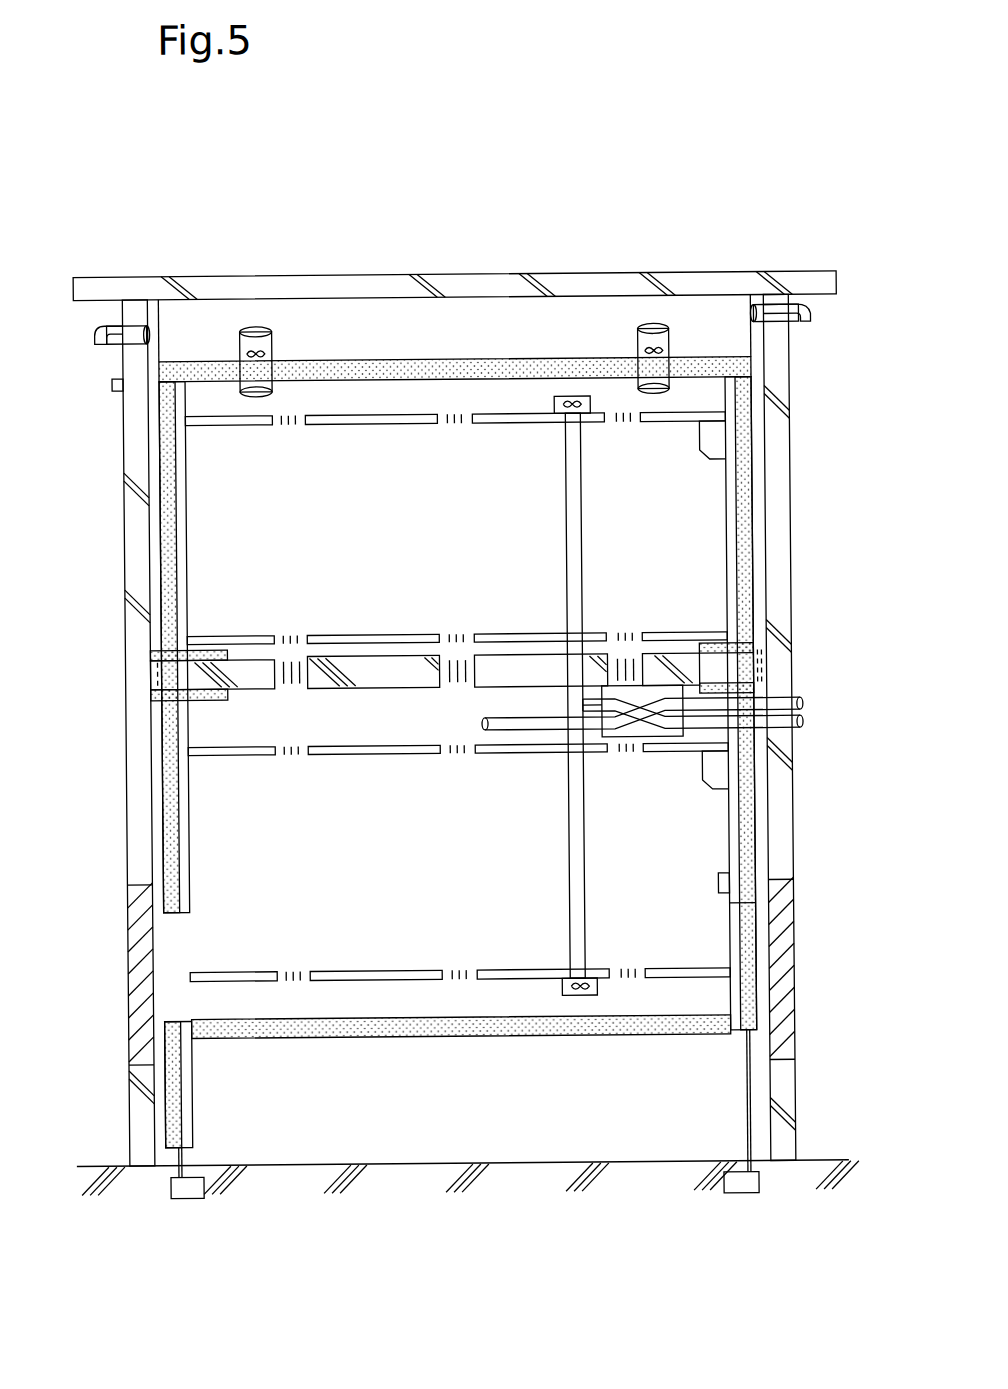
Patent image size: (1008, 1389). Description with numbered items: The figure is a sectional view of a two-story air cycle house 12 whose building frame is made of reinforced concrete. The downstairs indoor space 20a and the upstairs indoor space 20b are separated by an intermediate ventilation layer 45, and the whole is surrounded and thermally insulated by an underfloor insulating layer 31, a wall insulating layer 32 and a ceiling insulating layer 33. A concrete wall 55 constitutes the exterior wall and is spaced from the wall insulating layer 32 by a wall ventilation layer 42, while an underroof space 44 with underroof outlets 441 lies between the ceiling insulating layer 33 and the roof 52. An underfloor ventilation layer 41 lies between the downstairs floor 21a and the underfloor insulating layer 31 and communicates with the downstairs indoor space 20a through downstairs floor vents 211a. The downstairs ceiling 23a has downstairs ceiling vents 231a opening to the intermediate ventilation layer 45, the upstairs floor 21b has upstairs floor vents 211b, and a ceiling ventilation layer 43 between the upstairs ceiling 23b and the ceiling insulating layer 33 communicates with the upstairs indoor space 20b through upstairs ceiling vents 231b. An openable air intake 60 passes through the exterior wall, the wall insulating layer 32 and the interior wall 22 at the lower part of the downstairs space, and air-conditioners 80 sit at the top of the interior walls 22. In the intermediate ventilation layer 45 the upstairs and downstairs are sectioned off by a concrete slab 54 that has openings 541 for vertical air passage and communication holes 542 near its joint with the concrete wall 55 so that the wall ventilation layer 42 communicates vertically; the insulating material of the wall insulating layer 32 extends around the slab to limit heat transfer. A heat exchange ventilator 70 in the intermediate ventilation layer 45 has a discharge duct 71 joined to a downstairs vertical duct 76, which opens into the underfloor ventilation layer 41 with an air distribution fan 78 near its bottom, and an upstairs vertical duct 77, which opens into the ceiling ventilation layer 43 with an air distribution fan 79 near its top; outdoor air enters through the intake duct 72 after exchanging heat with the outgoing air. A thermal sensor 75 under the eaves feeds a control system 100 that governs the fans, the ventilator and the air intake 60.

The air cycle house 12 is at (282, 181).
The roof 52 is at (406, 275).
The concrete wall 55 is at (127, 582).
The air intake 60 is at (124, 974).
The underroof outlets 441 is at (100, 328).
The thermal sensor 75 is at (115, 384).
The ceiling ventilation layer 43 is at (383, 395).
The ceiling insulating layer 33 is at (318, 359).
The underroof space 44 is at (450, 330).
The wall insulating layer 32 is at (165, 452).
The wall ventilation layer 42 is at (760, 448).
The air-conditioners 80 is at (724, 432).
The upstairs ceiling 23b is at (358, 425).
The upstairs ceiling vents 231b is at (470, 425).
The upstairs floor 21b is at (355, 634).
The upstairs floor vents 211b is at (280, 634).
The downstairs ceiling 23a is at (355, 755).
The downstairs ceiling vents 231a is at (280, 755).
The downstairs floor 21a is at (370, 970).
The downstairs floor vents 211a is at (470, 970).
The interior wall 22 is at (190, 540).
The upstairs indoor space 20b is at (348, 530).
The downstairs indoor space 20a is at (348, 866).
The intermediate ventilation layer 45 is at (348, 720).
The concrete slab 54 is at (420, 660).
The communication holes 542 is at (150, 702).
The openings 541 is at (275, 698).
The upstairs vertical duct 77 is at (584, 520).
The air distribution fan 79 is at (575, 397).
The air distribution fan 78 is at (578, 996).
The downstairs vertical duct 76 is at (567, 856).
The heat exchange ventilator 70 is at (652, 740).
The intake duct 72 is at (804, 708).
The discharge duct 71 is at (804, 733).
The control system 100 is at (717, 886).
The underfloor ventilation layer 41 is at (410, 1001).
The underfloor insulating layer 31 is at (300, 1036).